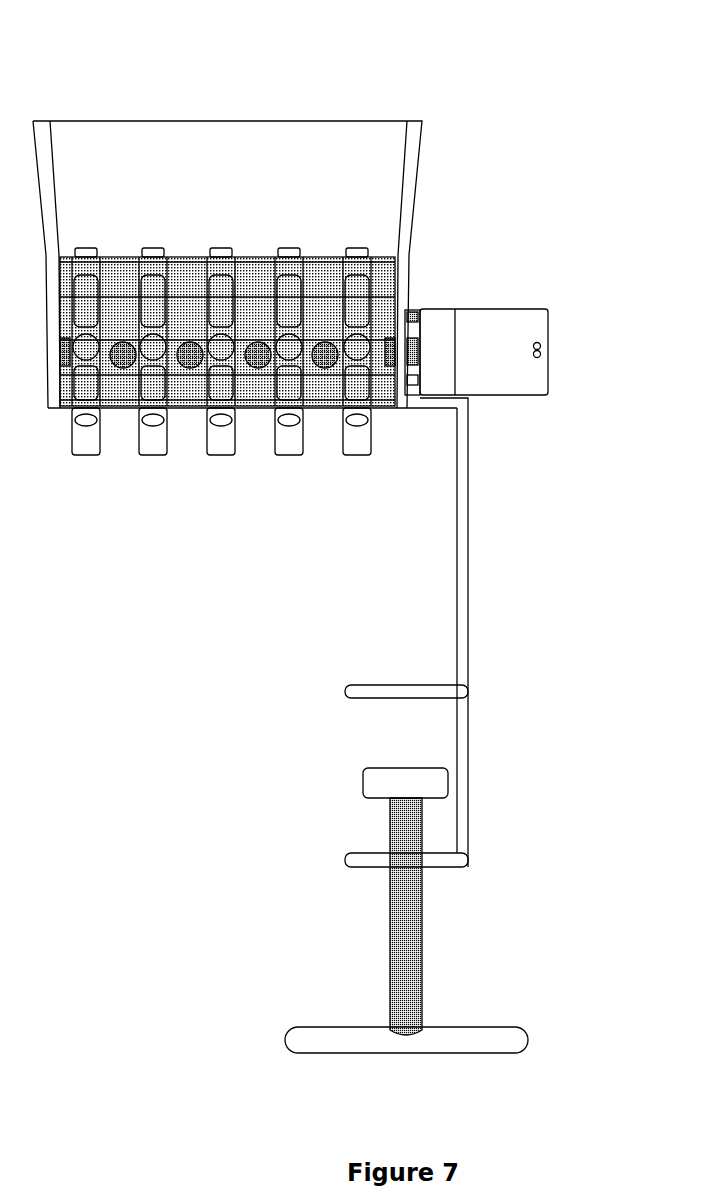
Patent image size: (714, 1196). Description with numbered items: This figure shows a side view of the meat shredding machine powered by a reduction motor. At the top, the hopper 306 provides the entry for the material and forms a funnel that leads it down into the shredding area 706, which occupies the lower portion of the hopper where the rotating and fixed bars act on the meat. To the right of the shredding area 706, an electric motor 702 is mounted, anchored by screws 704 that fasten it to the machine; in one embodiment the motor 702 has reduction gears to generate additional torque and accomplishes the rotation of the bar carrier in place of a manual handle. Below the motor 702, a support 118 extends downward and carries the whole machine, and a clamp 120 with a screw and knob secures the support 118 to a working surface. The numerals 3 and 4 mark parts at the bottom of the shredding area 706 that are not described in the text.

The hopper 306 is at (214, 138).
The shredding area 706 is at (326, 263).
The screws 704 is at (414, 307).
The motor 702 is at (495, 316).
The support 118 is at (472, 705).
The clamp 120 is at (391, 890).
The bottles 3 is at (86, 446).
The rollers 4 is at (123, 364).